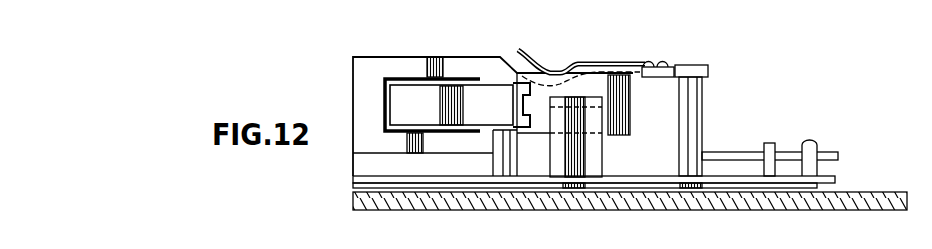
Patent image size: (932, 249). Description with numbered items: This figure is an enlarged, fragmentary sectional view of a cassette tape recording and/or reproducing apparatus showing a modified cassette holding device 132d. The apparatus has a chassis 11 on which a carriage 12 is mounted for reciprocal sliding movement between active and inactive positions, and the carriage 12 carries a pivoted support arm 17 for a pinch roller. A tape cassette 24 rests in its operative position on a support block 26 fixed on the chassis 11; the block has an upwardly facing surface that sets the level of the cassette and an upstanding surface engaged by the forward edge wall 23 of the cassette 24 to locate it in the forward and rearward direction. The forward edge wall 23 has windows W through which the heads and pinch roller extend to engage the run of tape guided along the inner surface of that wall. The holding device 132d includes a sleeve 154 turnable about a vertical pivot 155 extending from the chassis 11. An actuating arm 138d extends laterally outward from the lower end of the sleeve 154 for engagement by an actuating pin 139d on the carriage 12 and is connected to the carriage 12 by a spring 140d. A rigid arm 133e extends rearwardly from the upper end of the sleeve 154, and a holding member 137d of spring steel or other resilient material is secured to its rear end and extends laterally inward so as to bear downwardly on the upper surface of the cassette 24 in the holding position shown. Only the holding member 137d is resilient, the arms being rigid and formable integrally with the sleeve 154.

The chassis 11 is at (776, 199).
The carriage 12 is at (353, 177).
The pivoted support arm 17 is at (443, 88).
The window W is at (390, 85).
The forward edge wall 23 is at (368, 65).
The tape cassette 24 is at (418, 56).
The support block 26 is at (600, 152).
The cassette holding device 132d is at (761, 100).
The bracket 133e is at (660, 78).
The holding member 137d is at (594, 44).
The actuating arm 138d is at (871, 150).
The actuating pin 139d is at (770, 141).
The spring 140d is at (846, 129).
The sleeve 154 is at (690, 128).
The vertical pivot 155 is at (682, 64).